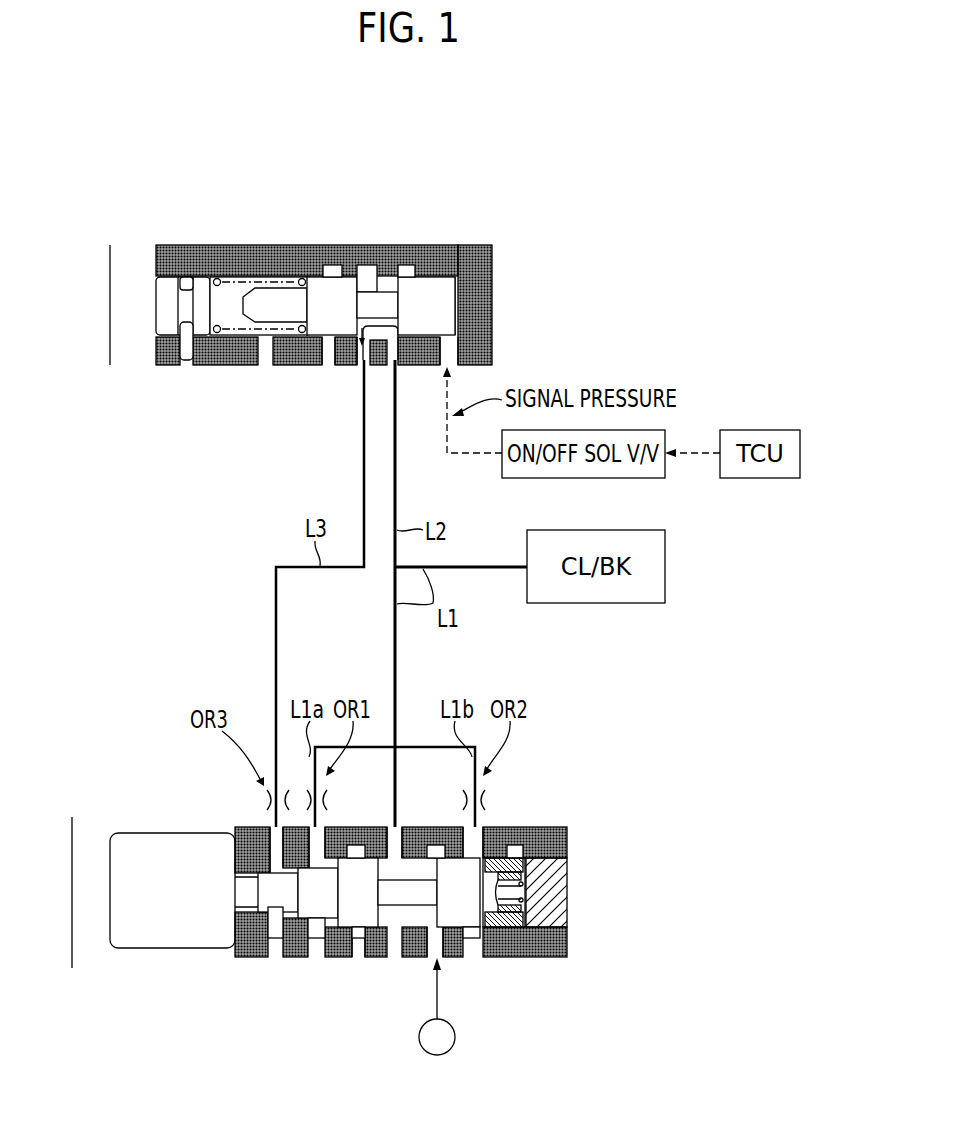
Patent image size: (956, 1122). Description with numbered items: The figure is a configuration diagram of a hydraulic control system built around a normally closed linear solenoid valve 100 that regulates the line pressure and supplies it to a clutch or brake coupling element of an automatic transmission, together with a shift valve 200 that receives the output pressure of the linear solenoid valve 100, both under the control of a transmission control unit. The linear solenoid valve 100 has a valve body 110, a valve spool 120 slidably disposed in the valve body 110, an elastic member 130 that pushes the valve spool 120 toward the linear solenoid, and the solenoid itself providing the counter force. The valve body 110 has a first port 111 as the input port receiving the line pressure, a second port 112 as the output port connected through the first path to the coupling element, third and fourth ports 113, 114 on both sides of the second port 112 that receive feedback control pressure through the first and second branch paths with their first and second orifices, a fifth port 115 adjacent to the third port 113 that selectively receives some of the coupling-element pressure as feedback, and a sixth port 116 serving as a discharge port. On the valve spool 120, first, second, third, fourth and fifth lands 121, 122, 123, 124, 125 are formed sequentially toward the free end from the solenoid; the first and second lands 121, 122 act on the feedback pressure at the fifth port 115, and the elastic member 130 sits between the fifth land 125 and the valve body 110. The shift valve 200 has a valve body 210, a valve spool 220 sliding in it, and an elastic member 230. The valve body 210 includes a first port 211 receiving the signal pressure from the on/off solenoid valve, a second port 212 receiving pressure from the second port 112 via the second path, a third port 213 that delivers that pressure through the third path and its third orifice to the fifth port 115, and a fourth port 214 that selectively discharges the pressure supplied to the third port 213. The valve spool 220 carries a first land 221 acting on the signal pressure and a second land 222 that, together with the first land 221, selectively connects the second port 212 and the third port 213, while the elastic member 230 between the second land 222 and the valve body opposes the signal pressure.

The linear solenoid valve 100 is at (347, 917).
The valve body 110 is at (555, 843).
The first port 111 is at (443, 938).
The second port 112 is at (397, 837).
The third port 113 is at (322, 837).
The fourth port 114 is at (478, 837).
The fifth port 115 is at (271, 833).
The sixth port 116 is at (350, 935).
The valve spool 120 is at (361, 934).
The first land 121 is at (265, 905).
The second land 122 is at (300, 912).
The third land 123 is at (372, 918).
The fourth land 124 is at (473, 918).
The fifth land 125 is at (497, 925).
The elastic member 130 is at (523, 892).
The shift valve 200 is at (326, 316).
The valve body 210 is at (436, 252).
The first port 211 is at (455, 342).
The second port 212 is at (398, 353).
The third port 213 is at (360, 353).
The fourth port 214 is at (328, 343).
The valve spool 220 is at (377, 284).
The first land 221 is at (422, 287).
The second land 222 is at (317, 287).
The elastic member 230 is at (243, 283).